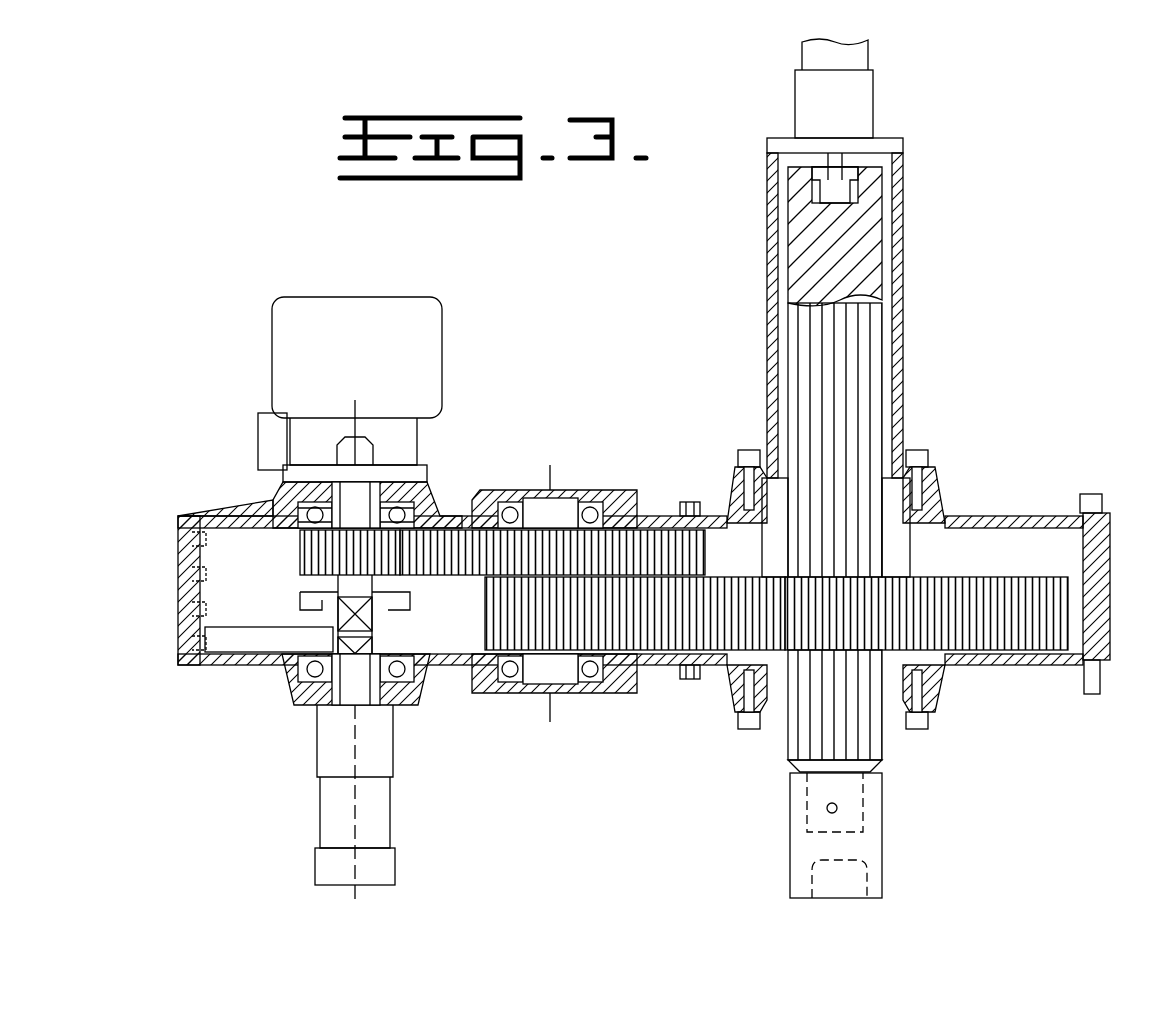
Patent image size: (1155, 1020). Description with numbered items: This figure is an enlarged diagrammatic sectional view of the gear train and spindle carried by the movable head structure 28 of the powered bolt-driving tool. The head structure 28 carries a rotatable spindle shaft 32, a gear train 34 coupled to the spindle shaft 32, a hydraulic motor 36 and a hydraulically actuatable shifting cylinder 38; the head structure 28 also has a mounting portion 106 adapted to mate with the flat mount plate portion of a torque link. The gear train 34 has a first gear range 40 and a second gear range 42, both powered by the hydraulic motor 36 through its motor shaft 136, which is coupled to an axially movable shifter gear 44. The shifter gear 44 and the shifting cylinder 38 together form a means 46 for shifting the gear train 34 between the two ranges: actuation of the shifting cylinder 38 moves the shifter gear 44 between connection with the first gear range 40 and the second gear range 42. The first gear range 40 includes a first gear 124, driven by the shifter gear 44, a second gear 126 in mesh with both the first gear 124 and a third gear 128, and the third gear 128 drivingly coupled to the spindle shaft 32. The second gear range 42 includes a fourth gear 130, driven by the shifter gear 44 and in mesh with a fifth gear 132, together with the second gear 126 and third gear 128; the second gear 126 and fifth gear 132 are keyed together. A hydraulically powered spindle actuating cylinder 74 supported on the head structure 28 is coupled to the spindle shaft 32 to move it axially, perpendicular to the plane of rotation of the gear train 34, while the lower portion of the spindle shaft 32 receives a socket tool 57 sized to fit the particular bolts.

The movable head structure 28 is at (590, 415).
The rotatable spindle shaft 32 is at (870, 745).
The gear train 34 is at (708, 675).
The hydraulic motor 36 is at (370, 363).
The shifting cylinder 38 is at (325, 808).
The first gear range 40 is at (485, 645).
The second gear range 42 is at (640, 530).
The shifter gear 44 is at (312, 618).
The means for shifting 46 is at (298, 712).
The socket tool 57 is at (873, 845).
The spindle actuating cylinder 74 is at (868, 100).
The mounting portion 106 is at (178, 634).
The first gear 124 is at (232, 647).
The second gear 126 is at (560, 645).
The third gear 128 is at (1012, 565).
The fourth gear 130 is at (300, 560).
The fifth gear 132 is at (703, 553).
The motor shaft 136 is at (432, 500).